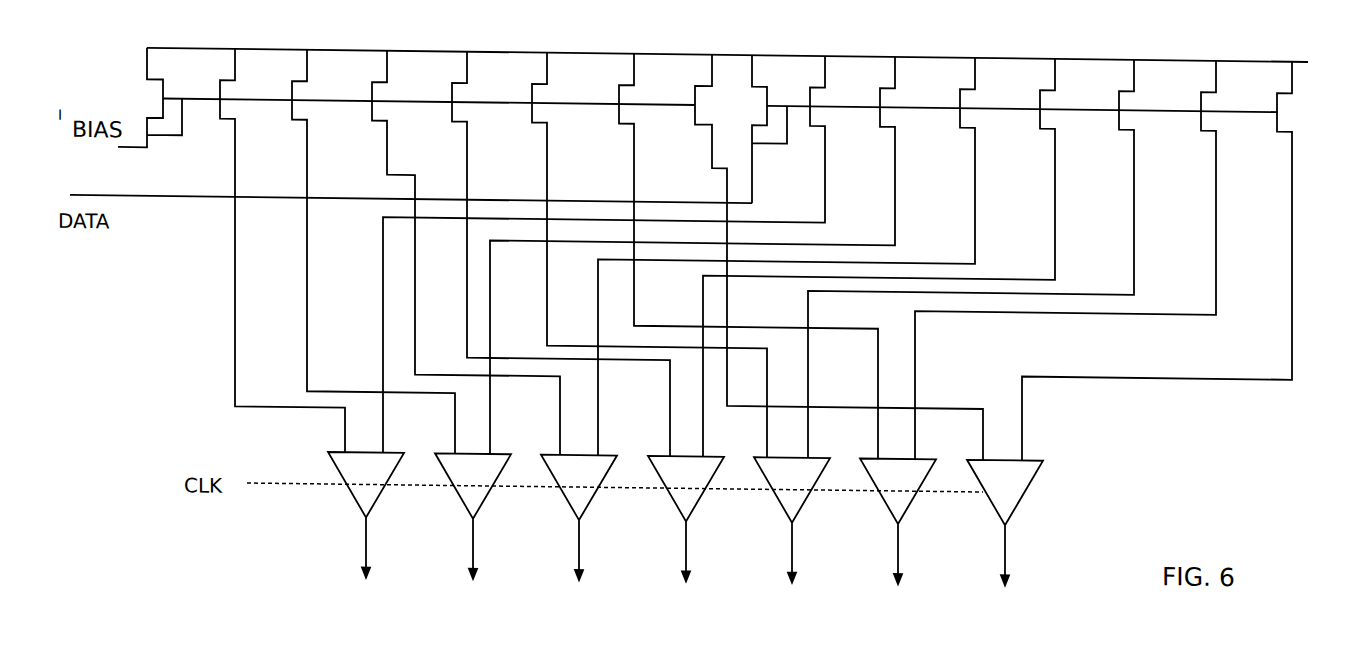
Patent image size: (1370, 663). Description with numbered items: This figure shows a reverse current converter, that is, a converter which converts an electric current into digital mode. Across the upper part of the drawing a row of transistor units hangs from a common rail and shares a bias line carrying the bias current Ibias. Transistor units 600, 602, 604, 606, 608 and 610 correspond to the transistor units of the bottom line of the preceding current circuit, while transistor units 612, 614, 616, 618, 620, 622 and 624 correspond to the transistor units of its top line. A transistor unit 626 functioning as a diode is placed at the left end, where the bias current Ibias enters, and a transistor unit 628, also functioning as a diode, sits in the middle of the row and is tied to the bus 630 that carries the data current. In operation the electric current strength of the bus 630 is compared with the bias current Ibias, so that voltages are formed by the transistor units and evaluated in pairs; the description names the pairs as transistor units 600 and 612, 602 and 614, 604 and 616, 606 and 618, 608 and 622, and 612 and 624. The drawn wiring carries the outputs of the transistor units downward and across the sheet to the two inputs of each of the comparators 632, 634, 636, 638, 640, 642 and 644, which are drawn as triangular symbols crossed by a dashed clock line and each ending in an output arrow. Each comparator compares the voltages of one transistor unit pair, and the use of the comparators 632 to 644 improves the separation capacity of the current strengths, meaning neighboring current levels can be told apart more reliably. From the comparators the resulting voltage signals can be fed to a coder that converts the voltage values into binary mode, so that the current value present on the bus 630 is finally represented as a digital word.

The transistor unit 600 is at (222, 100).
The transistor unit 602 is at (373, 252).
The transistor unit 604 is at (466, 253).
The transistor unit 606 is at (455, 104).
The transistor unit 608 is at (534, 104).
The transistor unit 610 is at (622, 103).
The transistor unit 612 is at (813, 108).
The transistor unit 614 is at (883, 108).
The transistor unit 616 is at (963, 108).
The transistor unit 618 is at (1043, 109).
The transistor unit 620 is at (1122, 109).
The transistor unit 622 is at (1204, 109).
The transistor unit 624 is at (1280, 109).
The transistor unit functioning as a diode 626 is at (197, 73).
The transistor unit functioning as a diode 628 is at (764, 111).
The bus 630 is at (180, 193).
The comparator 632 is at (378, 490).
The comparator 634 is at (485, 491).
The comparator 636 is at (591, 490).
The comparator 638 is at (698, 489).
The comparator 640 is at (804, 488).
The comparator 642 is at (910, 487).
The comparator 644 is at (1016, 486).